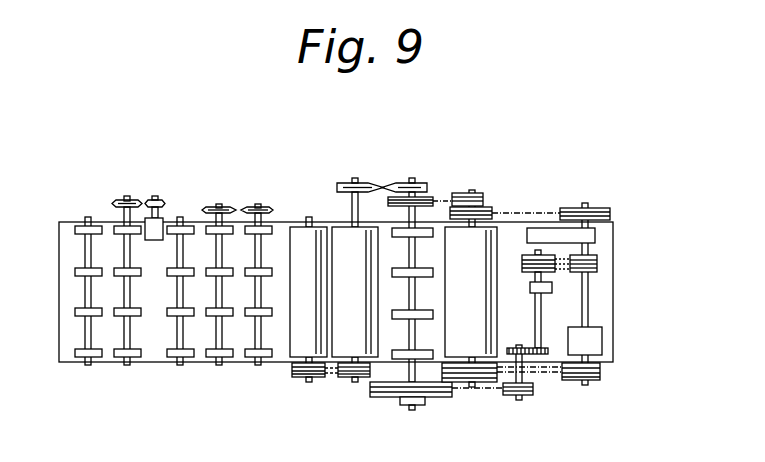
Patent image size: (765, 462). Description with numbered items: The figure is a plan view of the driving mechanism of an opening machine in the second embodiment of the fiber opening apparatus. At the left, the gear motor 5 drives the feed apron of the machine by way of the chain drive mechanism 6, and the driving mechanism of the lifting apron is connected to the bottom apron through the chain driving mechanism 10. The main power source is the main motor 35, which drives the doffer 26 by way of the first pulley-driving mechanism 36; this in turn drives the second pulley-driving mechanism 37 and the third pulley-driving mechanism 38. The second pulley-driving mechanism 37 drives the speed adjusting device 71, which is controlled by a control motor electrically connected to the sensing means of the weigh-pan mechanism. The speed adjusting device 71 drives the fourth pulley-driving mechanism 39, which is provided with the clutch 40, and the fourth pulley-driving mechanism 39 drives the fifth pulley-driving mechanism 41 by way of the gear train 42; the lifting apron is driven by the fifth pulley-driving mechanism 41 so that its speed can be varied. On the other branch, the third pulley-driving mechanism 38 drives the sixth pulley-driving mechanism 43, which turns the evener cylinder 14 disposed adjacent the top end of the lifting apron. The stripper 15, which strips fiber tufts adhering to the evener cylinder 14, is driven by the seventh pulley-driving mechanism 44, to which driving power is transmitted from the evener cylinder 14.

The gear motor 5 is at (163, 222).
The chain drive mechanism 6 is at (140, 200).
The chain driving mechanism 10 is at (239, 208).
The evener cylinder 14 is at (355, 278).
The stripper 15 is at (308, 291).
The doffer 26 is at (471, 291).
The main motor 35 is at (585, 341).
The first pulley-driving mechanism 36 is at (545, 385).
The second pulley-driving mechanism 37 is at (545, 210).
The third pulley-driving mechanism 38 is at (452, 197).
The fourth pulley-driving mechanism 39 is at (590, 280).
The clutch 40 is at (541, 287).
The fifth pulley-driving mechanism 41 is at (465, 393).
The gear train 42 is at (527, 348).
The sixth pulley-driving mechanism 43 is at (384, 187).
The seventh pulley-driving mechanism 44 is at (330, 380).
The speed adjusting device 71 is at (590, 239).